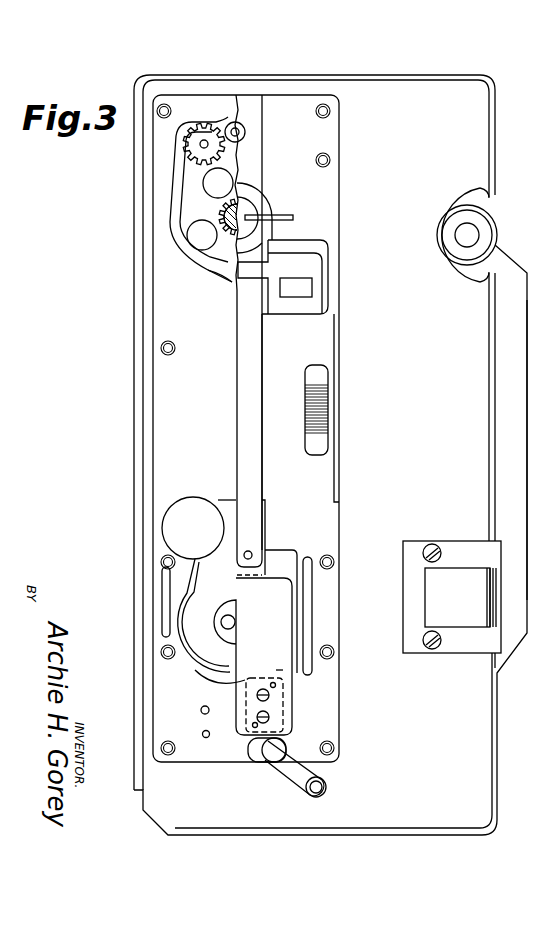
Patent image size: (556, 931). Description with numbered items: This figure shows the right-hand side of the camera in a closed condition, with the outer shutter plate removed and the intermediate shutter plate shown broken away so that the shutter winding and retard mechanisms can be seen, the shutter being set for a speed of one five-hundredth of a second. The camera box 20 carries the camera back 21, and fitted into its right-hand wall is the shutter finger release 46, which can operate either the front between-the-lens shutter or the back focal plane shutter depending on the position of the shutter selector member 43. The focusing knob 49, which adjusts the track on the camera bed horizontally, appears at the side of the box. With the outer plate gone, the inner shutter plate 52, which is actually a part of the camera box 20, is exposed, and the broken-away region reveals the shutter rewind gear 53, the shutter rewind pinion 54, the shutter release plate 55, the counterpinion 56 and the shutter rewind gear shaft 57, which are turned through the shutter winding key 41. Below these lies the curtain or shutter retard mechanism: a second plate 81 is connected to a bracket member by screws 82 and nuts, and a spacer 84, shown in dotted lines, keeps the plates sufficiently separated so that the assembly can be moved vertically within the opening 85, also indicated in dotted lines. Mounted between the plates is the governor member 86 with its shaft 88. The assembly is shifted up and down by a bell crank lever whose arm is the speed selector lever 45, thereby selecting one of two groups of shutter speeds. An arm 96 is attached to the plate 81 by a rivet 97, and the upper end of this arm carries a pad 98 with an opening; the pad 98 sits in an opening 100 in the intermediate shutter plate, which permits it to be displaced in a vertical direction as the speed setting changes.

The camera box 20 is at (477, 160).
The camera back 21 is at (507, 397).
The shutter winding key 41 is at (283, 219).
The shutter selector member 43 is at (320, 407).
The speed selector lever 45 is at (291, 770).
The shutter finger release 46 is at (458, 575).
The focusing knob 49 is at (483, 231).
The inner shutter plate 52 is at (162, 280).
The shutter rewind gear 53 is at (190, 196).
The shutter rewind pinion 54 is at (200, 149).
The shutter release plate 55 is at (178, 240).
The counterpinion 56 is at (233, 258).
The shutter rewind gear shaft 57 is at (213, 216).
The second plate 81 is at (250, 670).
The screws 82 is at (257, 716).
The spacer 84 is at (290, 710).
The opening 85 is at (280, 679).
The governor member 86 is at (225, 588).
The shaft 88 is at (236, 622).
The arm 96 is at (247, 370).
The rivet 97 is at (310, 307).
The pad 98 is at (330, 352).
The opening in the plate 100 is at (318, 247).